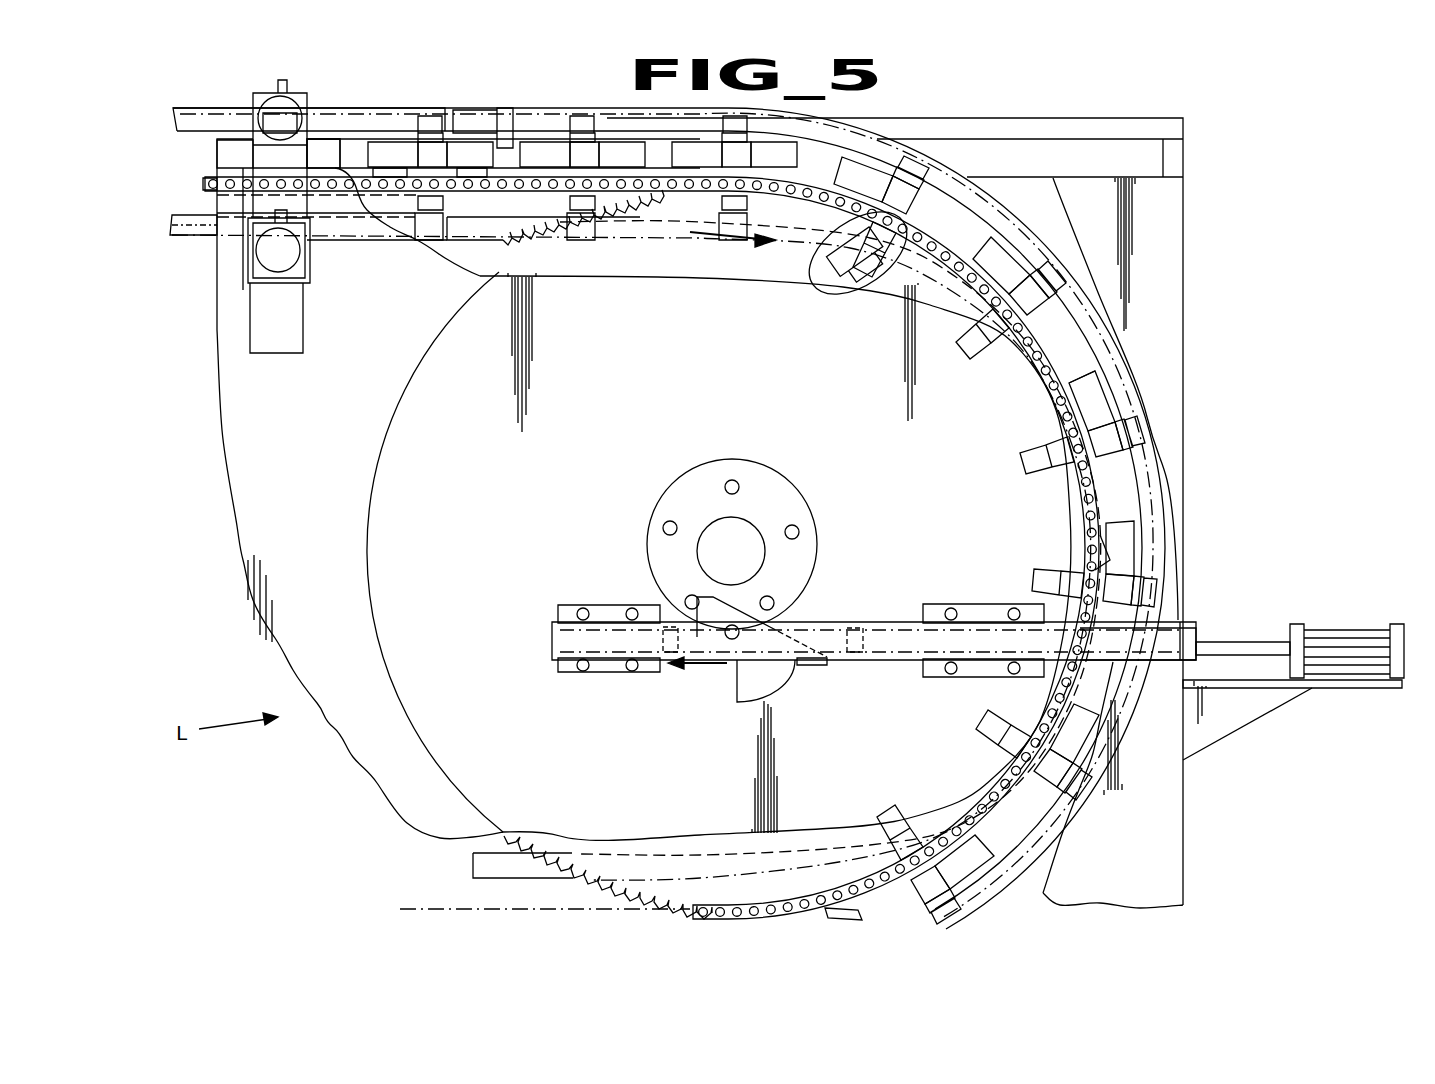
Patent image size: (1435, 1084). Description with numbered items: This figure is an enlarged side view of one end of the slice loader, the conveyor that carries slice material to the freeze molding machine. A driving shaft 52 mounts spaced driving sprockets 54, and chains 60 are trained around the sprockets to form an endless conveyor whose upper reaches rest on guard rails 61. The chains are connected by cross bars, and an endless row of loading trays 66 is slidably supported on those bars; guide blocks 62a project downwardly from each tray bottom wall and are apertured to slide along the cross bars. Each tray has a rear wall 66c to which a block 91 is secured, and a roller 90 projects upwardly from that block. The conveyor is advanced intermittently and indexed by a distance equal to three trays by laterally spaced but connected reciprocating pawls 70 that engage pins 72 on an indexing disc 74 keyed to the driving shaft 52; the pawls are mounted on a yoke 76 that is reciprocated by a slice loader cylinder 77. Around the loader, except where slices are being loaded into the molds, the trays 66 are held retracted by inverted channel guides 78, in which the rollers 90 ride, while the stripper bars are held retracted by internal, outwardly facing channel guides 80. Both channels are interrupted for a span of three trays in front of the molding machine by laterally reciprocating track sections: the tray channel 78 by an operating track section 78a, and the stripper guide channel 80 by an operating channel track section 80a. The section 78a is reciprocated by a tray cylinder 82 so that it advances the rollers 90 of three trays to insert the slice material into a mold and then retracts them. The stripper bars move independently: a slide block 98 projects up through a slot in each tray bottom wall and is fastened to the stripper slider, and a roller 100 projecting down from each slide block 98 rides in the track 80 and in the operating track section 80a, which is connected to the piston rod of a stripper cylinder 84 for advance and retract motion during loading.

The driving shaft 52 is at (745, 553).
The driving sprockets 54 is at (621, 270).
The chains 60 is at (1088, 513).
The guard rails 61 is at (203, 187).
The guide blocks 62a is at (1092, 560).
The loading trays 66 is at (217, 153).
The rear wall 66c is at (334, 147).
The reciprocating pawls 70 is at (793, 622).
The pins 72 is at (667, 521).
The indexing disc 74 is at (780, 491).
The yoke 76 is at (1165, 628).
The slice loader cylinder 77 is at (1339, 632).
The inverted channel guides 78 is at (478, 112).
The operating track section 78a is at (344, 106).
The channel guides 80 is at (468, 232).
The operating channel track section 80a is at (180, 235).
The tray cylinder 82 is at (276, 96).
The stripper cylinder 84 is at (290, 261).
The roller 90 is at (270, 122).
The block 91 is at (437, 157).
The slide block 98 is at (575, 205).
The roller 100 is at (410, 233).